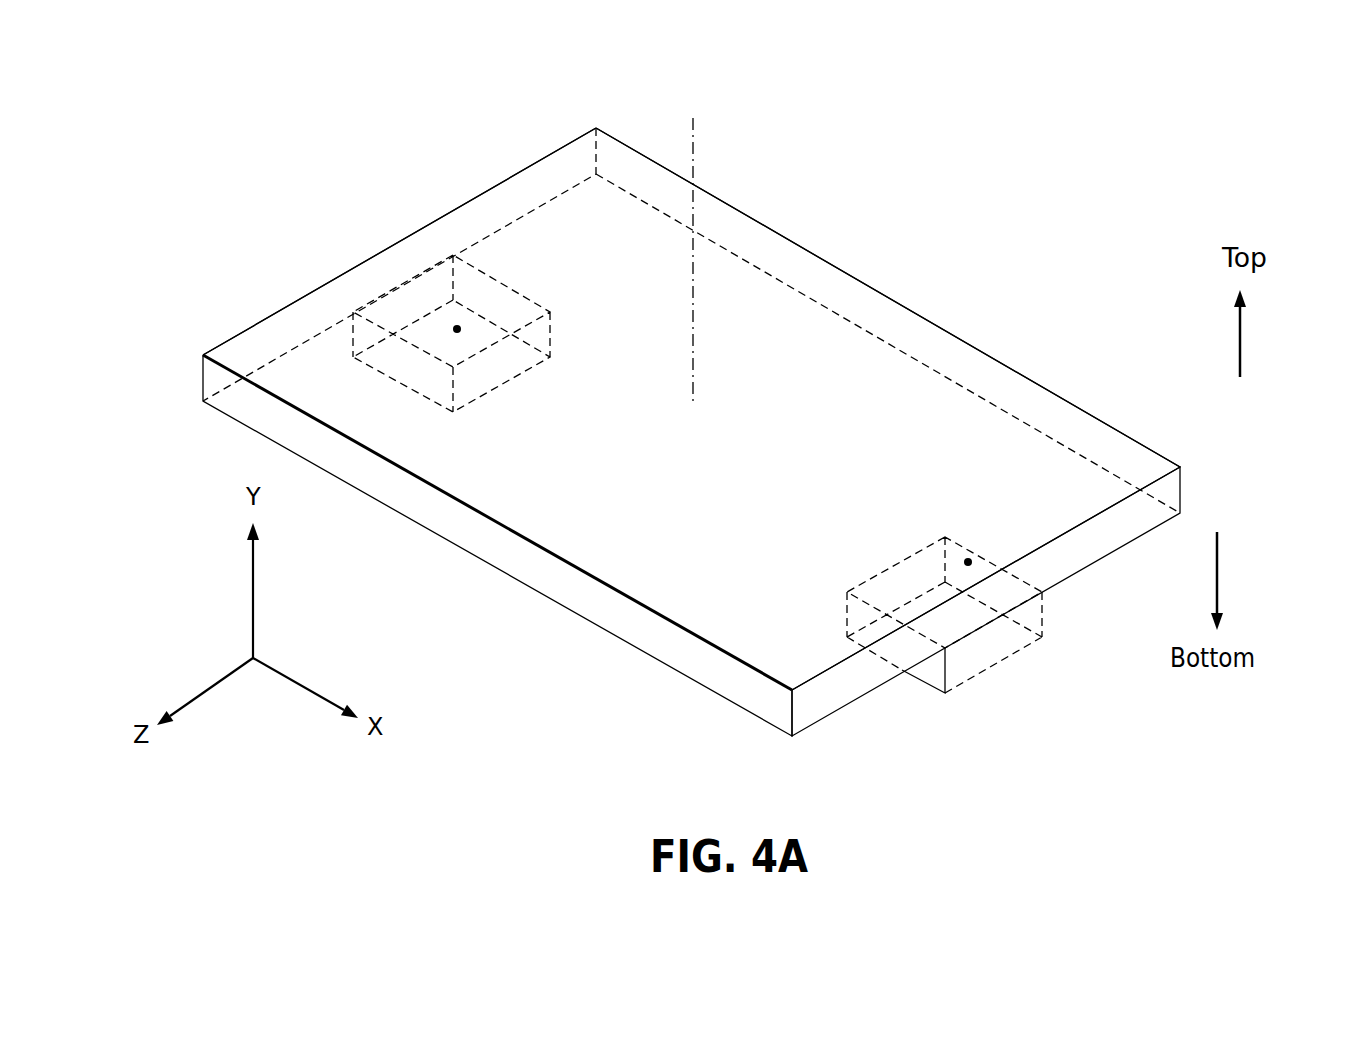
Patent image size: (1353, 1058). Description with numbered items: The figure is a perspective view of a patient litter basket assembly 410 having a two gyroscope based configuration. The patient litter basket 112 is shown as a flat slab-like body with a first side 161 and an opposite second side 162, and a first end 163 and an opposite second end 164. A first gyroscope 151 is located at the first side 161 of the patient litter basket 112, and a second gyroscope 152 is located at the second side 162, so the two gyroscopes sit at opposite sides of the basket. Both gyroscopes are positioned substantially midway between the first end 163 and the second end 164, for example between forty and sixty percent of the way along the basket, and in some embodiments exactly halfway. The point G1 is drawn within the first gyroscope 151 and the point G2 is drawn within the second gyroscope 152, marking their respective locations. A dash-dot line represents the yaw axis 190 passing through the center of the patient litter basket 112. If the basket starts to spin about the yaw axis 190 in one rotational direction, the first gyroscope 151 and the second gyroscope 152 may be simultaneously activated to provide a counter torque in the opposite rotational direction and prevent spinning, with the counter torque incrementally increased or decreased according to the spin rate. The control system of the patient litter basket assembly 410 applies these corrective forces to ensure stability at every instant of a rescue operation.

The patient litter basket 112 is at (502, 243).
The first gyroscope 151 is at (958, 668).
The second gyroscope 152 is at (370, 330).
The first side 161 is at (833, 707).
The second side 162 is at (233, 333).
The first end 163 is at (443, 507).
The second end 164 is at (857, 282).
The yaw axis 190 is at (693, 153).
The patient litter basket assembly 410 is at (1098, 136).
The center of gravity of first component G1 is at (968, 562).
The center of gravity of second component G2 is at (457, 329).